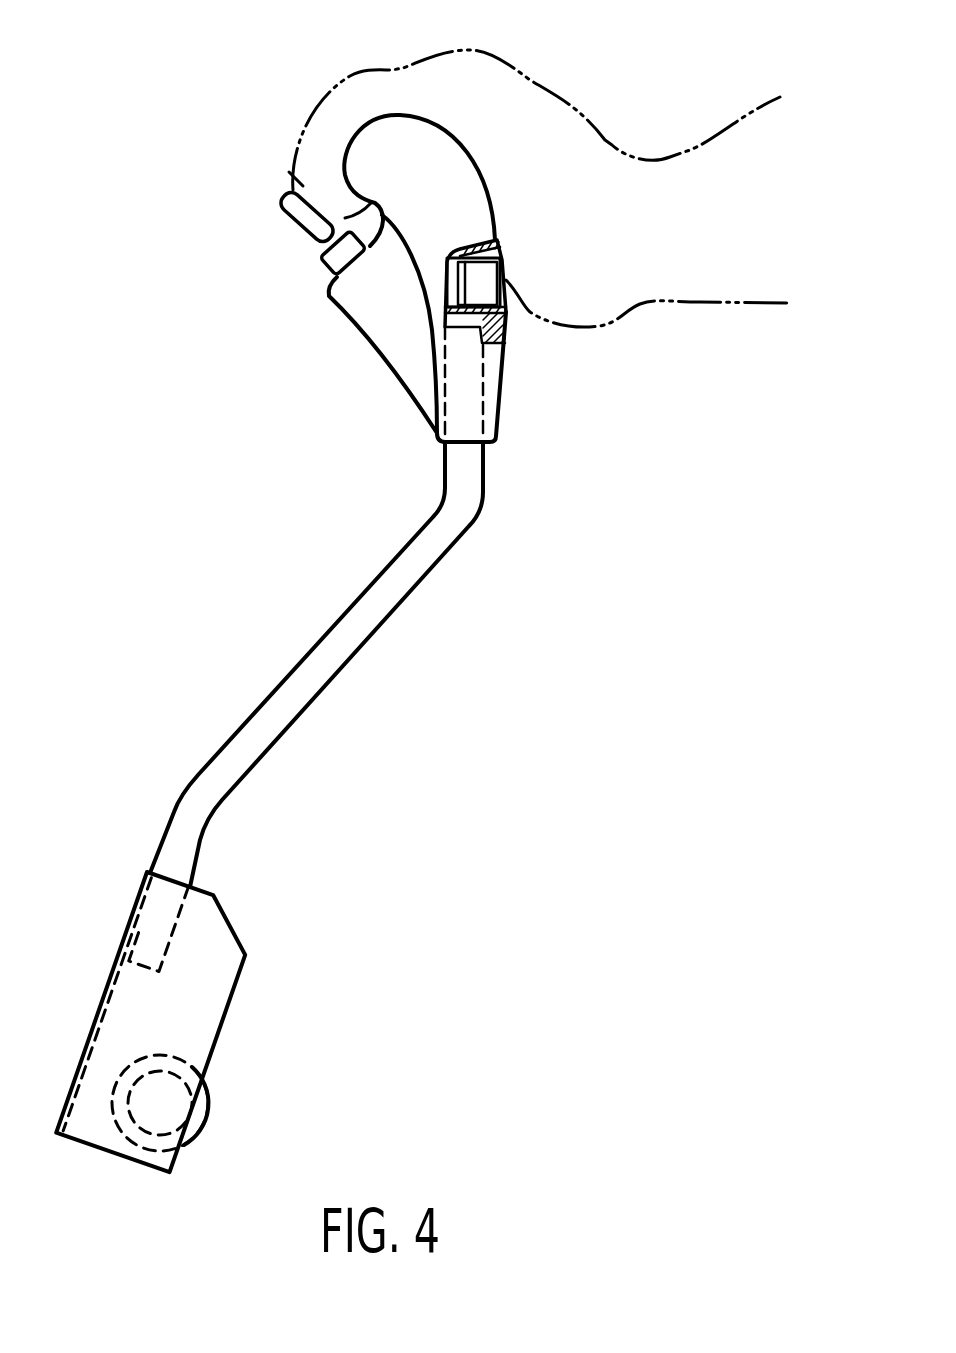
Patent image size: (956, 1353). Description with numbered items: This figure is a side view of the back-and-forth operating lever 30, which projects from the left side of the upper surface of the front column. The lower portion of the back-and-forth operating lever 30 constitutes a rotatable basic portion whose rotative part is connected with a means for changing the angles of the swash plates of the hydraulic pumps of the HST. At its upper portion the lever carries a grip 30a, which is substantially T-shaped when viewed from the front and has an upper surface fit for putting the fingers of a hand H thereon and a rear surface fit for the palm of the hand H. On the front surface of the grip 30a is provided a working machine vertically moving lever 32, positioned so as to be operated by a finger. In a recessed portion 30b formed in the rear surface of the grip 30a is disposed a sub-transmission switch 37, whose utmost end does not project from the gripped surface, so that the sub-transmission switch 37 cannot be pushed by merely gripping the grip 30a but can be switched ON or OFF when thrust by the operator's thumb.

The hand H is at (580, 107).
The back-and-forth operating lever 30 is at (218, 748).
The grip 30a is at (502, 410).
The recessed portion 30b is at (512, 300).
The working machine vertically moving lever 32 is at (298, 222).
The sub-transmission switch 37 is at (492, 279).